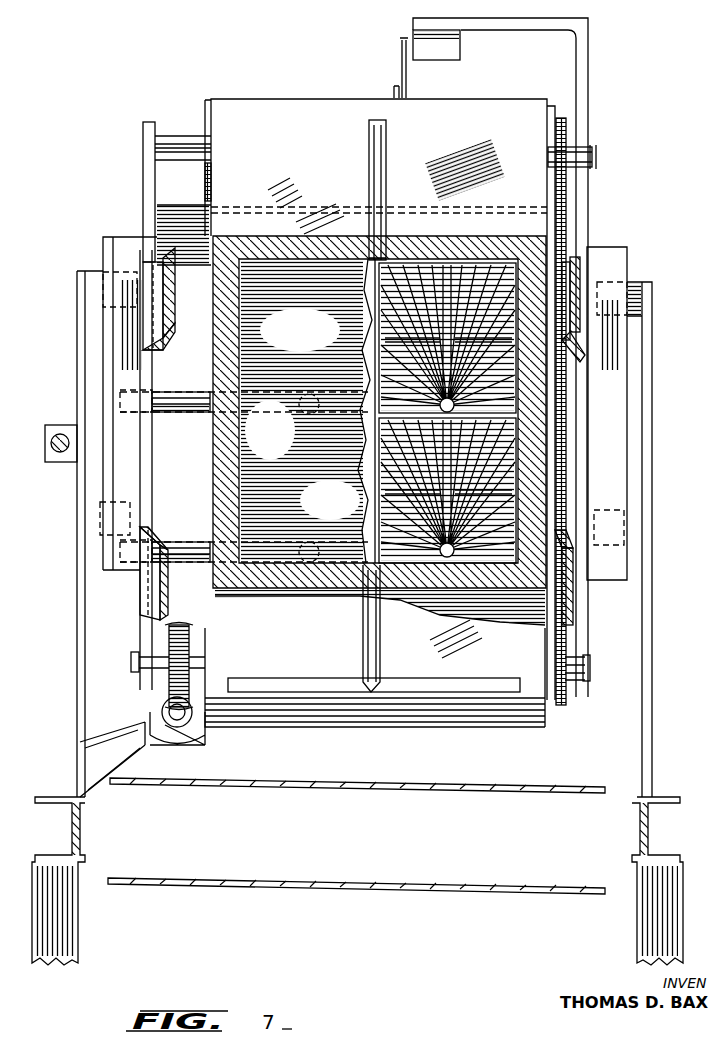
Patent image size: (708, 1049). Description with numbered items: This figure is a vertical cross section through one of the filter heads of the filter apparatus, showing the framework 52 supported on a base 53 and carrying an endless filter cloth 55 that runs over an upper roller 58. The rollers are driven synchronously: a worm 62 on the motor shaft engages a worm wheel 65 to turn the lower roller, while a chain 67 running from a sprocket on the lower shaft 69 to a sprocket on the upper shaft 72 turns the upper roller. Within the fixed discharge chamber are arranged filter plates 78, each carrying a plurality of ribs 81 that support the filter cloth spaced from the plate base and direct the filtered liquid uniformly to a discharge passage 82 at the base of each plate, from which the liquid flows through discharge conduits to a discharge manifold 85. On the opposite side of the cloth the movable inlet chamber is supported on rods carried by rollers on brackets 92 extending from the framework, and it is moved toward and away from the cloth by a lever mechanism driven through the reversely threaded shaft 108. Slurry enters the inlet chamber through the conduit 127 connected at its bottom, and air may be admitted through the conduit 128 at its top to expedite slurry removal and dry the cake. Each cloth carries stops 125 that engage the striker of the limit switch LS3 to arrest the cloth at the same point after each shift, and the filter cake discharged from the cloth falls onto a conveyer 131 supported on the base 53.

The limit switch LS3 is at (461, 48).
The stops 125 is at (454, 97).
The filter cloth 55 is at (302, 99).
The upper roller 58 is at (205, 114).
The upper shaft 72 is at (143, 150).
The air conduit 128 is at (386, 150).
The filter plates 78 is at (503, 292).
The ribs 81 is at (508, 388).
The brackets 92 is at (175, 300).
The discharge manifold 85 is at (181, 392).
The shaft 108 is at (50, 432).
The discharge passage 82 is at (362, 430).
The chain 67 is at (566, 610).
The worm wheel 65 is at (190, 646).
The slurry conduit 127 is at (380, 650).
The lower shaft 69 is at (588, 674).
The framework 52 is at (77, 708).
The worm 62 is at (195, 730).
The base 53 is at (80, 842).
The conveyer 131 is at (515, 792).